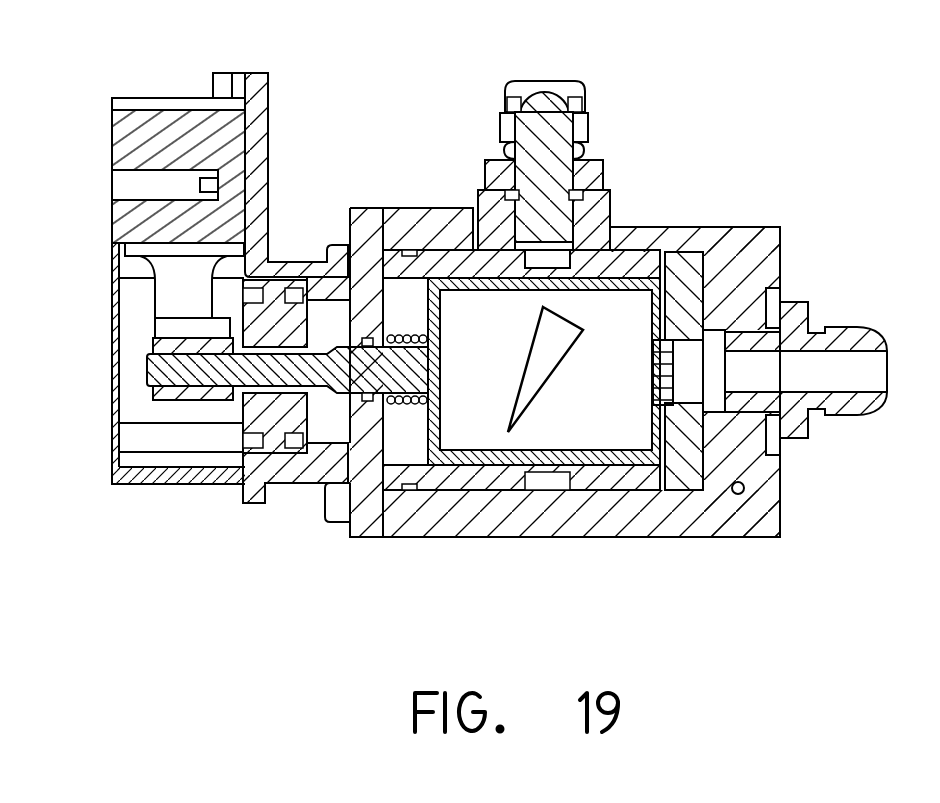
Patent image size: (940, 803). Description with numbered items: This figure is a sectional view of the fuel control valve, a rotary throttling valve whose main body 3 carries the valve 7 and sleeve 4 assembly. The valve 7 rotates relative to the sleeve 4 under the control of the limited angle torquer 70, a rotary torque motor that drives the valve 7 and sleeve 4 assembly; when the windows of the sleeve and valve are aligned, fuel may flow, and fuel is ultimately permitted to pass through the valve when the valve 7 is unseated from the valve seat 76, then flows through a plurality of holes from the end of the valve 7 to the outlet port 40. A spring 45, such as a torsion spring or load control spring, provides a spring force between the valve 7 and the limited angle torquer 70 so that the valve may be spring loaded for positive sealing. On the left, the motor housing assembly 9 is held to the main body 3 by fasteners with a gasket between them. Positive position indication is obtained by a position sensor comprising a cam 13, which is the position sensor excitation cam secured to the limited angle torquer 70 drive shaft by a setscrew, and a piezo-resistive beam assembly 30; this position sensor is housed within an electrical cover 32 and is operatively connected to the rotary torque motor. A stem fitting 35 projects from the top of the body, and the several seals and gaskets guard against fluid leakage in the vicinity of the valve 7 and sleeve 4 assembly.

The main body 3 is at (692, 540).
The sleeve 4 is at (628, 258).
The valve 7 is at (425, 453).
The motor housing assembly 9 is at (268, 172).
The cam 13 is at (197, 400).
The beam assembly 30 is at (162, 305).
The electrical cover 32 is at (193, 97).
The stem assembly 35 is at (547, 82).
The outlet port 40 is at (847, 415).
The spring 45 is at (405, 333).
The limited angle torquer 70 is at (277, 460).
The valve seat 76 is at (693, 272).